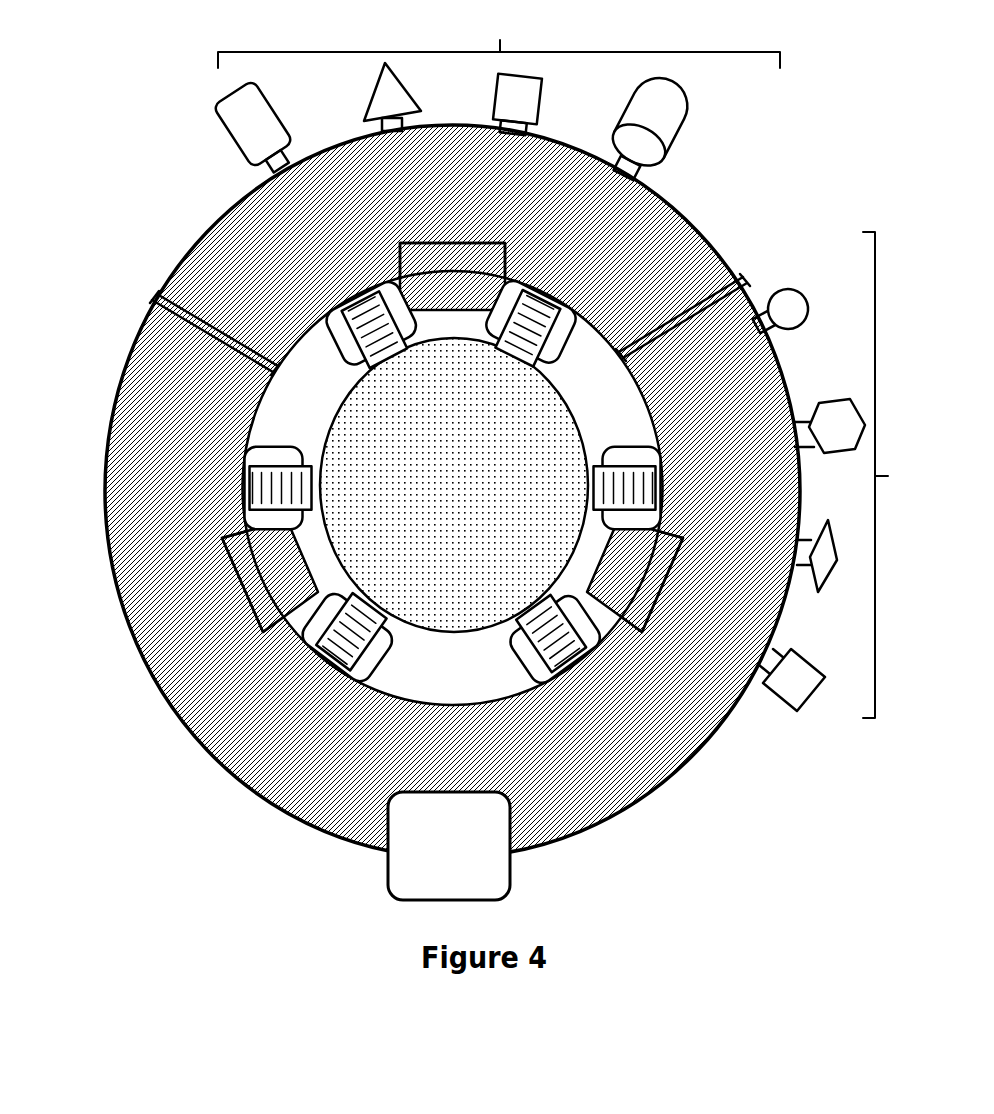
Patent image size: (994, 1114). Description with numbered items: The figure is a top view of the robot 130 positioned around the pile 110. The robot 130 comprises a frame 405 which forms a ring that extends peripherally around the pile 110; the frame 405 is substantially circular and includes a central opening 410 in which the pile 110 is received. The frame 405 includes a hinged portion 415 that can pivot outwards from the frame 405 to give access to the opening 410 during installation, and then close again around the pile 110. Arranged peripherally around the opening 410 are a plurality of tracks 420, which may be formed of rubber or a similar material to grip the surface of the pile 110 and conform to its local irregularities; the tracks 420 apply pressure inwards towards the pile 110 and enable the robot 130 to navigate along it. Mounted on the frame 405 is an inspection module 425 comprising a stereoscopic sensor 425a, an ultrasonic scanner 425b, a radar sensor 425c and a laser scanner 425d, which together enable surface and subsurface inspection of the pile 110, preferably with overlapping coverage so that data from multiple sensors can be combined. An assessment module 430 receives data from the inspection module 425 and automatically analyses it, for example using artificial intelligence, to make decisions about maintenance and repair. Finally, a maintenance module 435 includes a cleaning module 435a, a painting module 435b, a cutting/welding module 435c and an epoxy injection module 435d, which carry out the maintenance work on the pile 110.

The robot 130 is at (163, 105).
The frame 405 is at (148, 444).
The opening 410 is at (443, 686).
The hinged portion 415 is at (235, 223).
The tracks 420 is at (660, 462).
The pile 110 is at (478, 424).
The inspection module 425 is at (499, 41).
The stereoscopic sensor 425a is at (265, 103).
The ultrasonic scanner 425b is at (393, 98).
The radar sensor 425c is at (533, 98).
The laser scanner 425d is at (667, 100).
The assessment module 430 is at (505, 858).
The maintenance module 435 is at (903, 475).
The cleaning module 435a is at (803, 297).
The painting module 435b is at (834, 400).
The cutting/welding module 435c is at (843, 497).
The epoxy injection module 435d is at (811, 662).